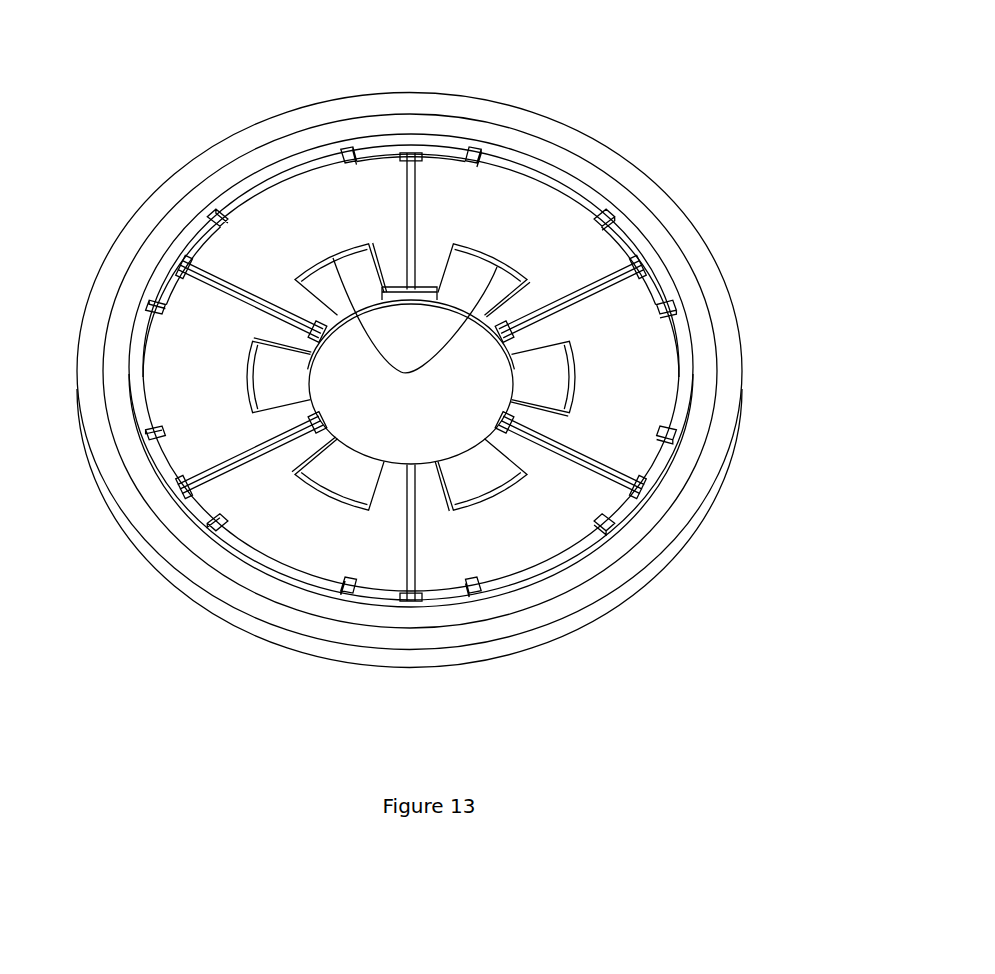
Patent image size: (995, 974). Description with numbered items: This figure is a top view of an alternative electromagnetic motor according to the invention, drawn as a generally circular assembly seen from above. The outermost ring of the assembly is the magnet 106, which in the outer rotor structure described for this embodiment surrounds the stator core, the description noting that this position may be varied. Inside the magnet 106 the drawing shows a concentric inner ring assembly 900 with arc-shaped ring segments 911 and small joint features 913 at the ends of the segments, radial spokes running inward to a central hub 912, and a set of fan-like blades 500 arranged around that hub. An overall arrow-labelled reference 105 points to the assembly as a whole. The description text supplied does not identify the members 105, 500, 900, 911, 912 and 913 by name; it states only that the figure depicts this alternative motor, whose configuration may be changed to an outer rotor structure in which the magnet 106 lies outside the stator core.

The fan assembly 105 is at (423, 351).
The magnet 106 is at (613, 552).
The fan blade 500 is at (553, 370).
The spoke ring / grille 900 is at (406, 346).
The ring segment 911 is at (267, 177).
The hub 912 is at (411, 361).
The joint clip 913 is at (195, 523).